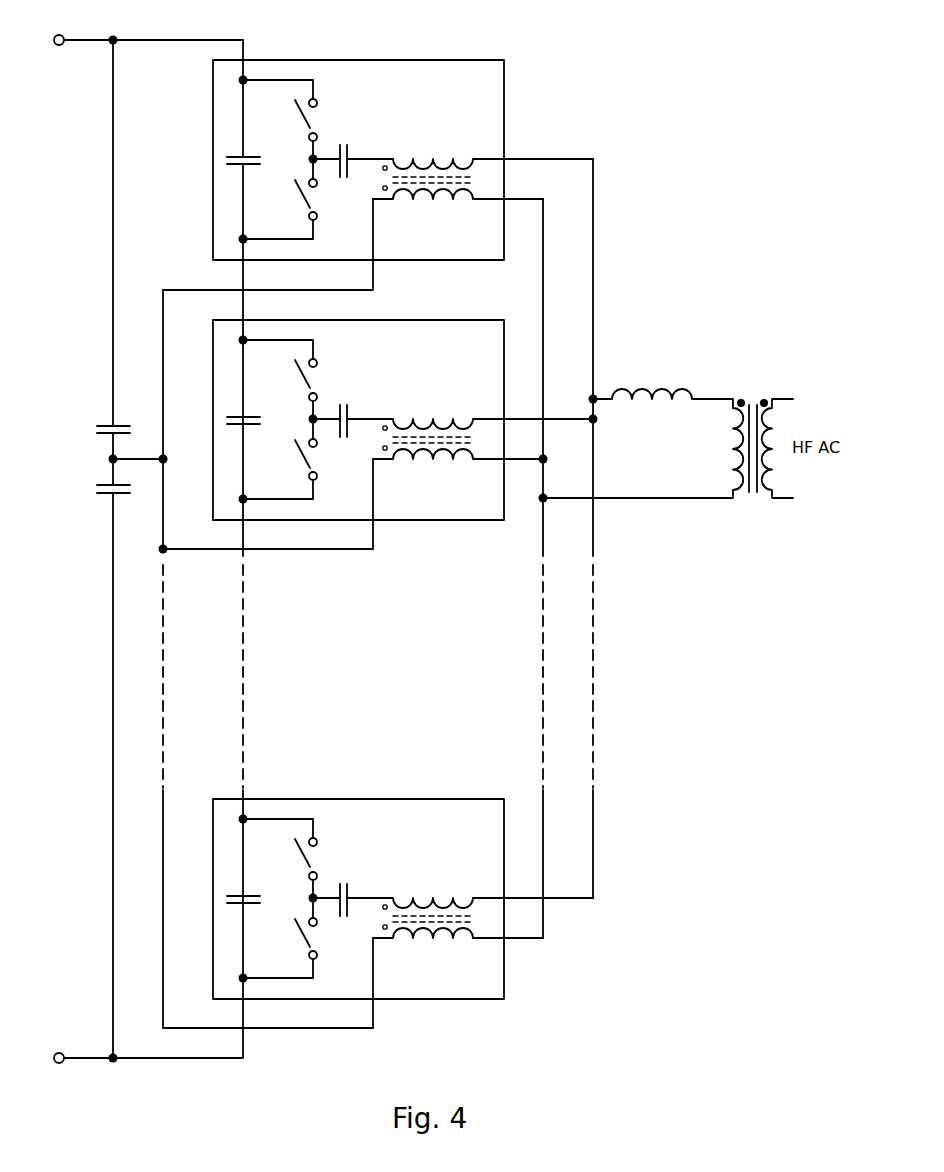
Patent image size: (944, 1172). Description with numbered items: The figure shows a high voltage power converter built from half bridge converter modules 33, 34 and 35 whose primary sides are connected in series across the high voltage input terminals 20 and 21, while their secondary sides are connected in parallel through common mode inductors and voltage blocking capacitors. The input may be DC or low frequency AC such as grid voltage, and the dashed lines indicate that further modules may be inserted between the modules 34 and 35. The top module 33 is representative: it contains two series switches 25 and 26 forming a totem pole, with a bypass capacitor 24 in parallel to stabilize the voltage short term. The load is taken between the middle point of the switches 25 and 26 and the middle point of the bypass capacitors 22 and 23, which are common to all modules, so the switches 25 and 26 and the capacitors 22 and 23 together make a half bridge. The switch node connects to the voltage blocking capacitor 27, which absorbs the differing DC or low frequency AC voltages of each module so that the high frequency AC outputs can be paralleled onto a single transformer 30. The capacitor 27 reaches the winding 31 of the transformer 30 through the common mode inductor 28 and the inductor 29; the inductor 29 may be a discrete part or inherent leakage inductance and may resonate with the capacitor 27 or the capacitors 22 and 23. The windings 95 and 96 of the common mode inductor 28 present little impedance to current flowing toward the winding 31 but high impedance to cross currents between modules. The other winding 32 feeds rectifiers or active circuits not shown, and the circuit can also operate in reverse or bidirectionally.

The high voltage input terminal 20 is at (73, 50).
The high voltage input terminal 21 is at (73, 1048).
The bypass capacitor 22 is at (92, 428).
The bypass capacitor 23 is at (92, 490).
The bypass capacitor 24 is at (235, 167).
The switch 25 is at (315, 120).
The switch 26 is at (317, 200).
The voltage blocking capacitor 27 is at (360, 147).
The common mode inductor 28 is at (483, 180).
The inductor 29 is at (630, 385).
The transformer 30 is at (750, 392).
The transformer winding 31 is at (730, 440).
The transformer winding 32 is at (783, 440).
The module 33 is at (353, 60).
The module 34 is at (453, 522).
The module 35 is at (353, 799).
The winding 95 is at (418, 158).
The winding 96 is at (422, 200).